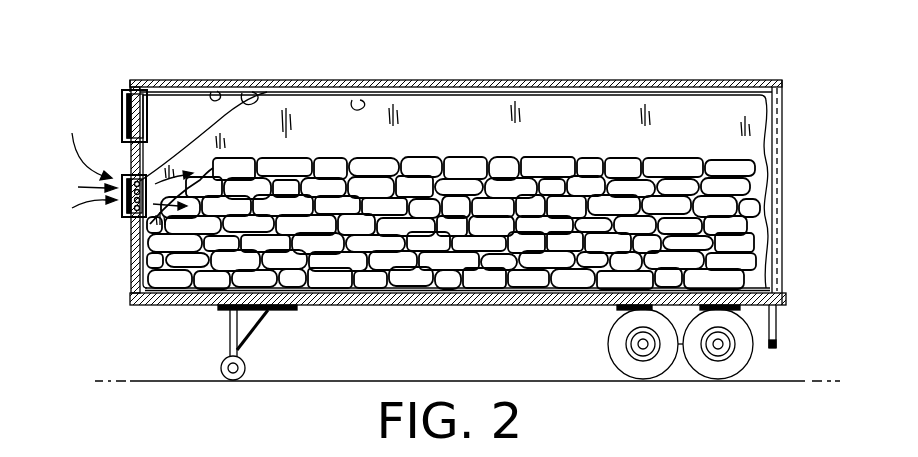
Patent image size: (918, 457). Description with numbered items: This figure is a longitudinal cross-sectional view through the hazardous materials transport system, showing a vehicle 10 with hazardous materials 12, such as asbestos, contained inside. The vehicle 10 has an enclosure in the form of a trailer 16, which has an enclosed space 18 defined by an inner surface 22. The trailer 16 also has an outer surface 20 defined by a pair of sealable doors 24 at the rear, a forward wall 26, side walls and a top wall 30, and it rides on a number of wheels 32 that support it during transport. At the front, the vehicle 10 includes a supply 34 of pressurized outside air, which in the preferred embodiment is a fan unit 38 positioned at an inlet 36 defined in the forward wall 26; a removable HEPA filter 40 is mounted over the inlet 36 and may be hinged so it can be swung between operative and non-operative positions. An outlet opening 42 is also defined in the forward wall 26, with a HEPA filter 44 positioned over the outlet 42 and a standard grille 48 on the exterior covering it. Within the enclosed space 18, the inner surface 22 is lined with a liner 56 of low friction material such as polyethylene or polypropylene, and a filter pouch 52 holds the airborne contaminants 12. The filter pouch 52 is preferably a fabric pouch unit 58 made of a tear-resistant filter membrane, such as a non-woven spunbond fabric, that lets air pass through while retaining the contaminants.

The vehicle 10 is at (474, 30).
The hazardous materials 12 is at (650, 163).
The trailer 16 is at (663, 75).
The enclosed space 18 is at (447, 115).
The outer surface 20 is at (533, 83).
The inner surface 22 is at (242, 93).
The sealable doors 24 is at (780, 180).
The forward wall 26 is at (128, 267).
The top wall 30 is at (455, 159).
The wheels 32 is at (603, 353).
The supply of pressurized outside air 34 is at (84, 143).
The inlet 36 is at (81, 191).
The fan unit 38 is at (126, 220).
The removable HEPA filter 40 is at (122, 171).
The outlet opening 42 is at (112, 104).
The HEPA filter 44 is at (147, 97).
The grille 48 is at (127, 120).
The filter pouch 52 is at (352, 100).
The liner 56 is at (211, 92).
The fabric pouch unit 58 is at (207, 130).